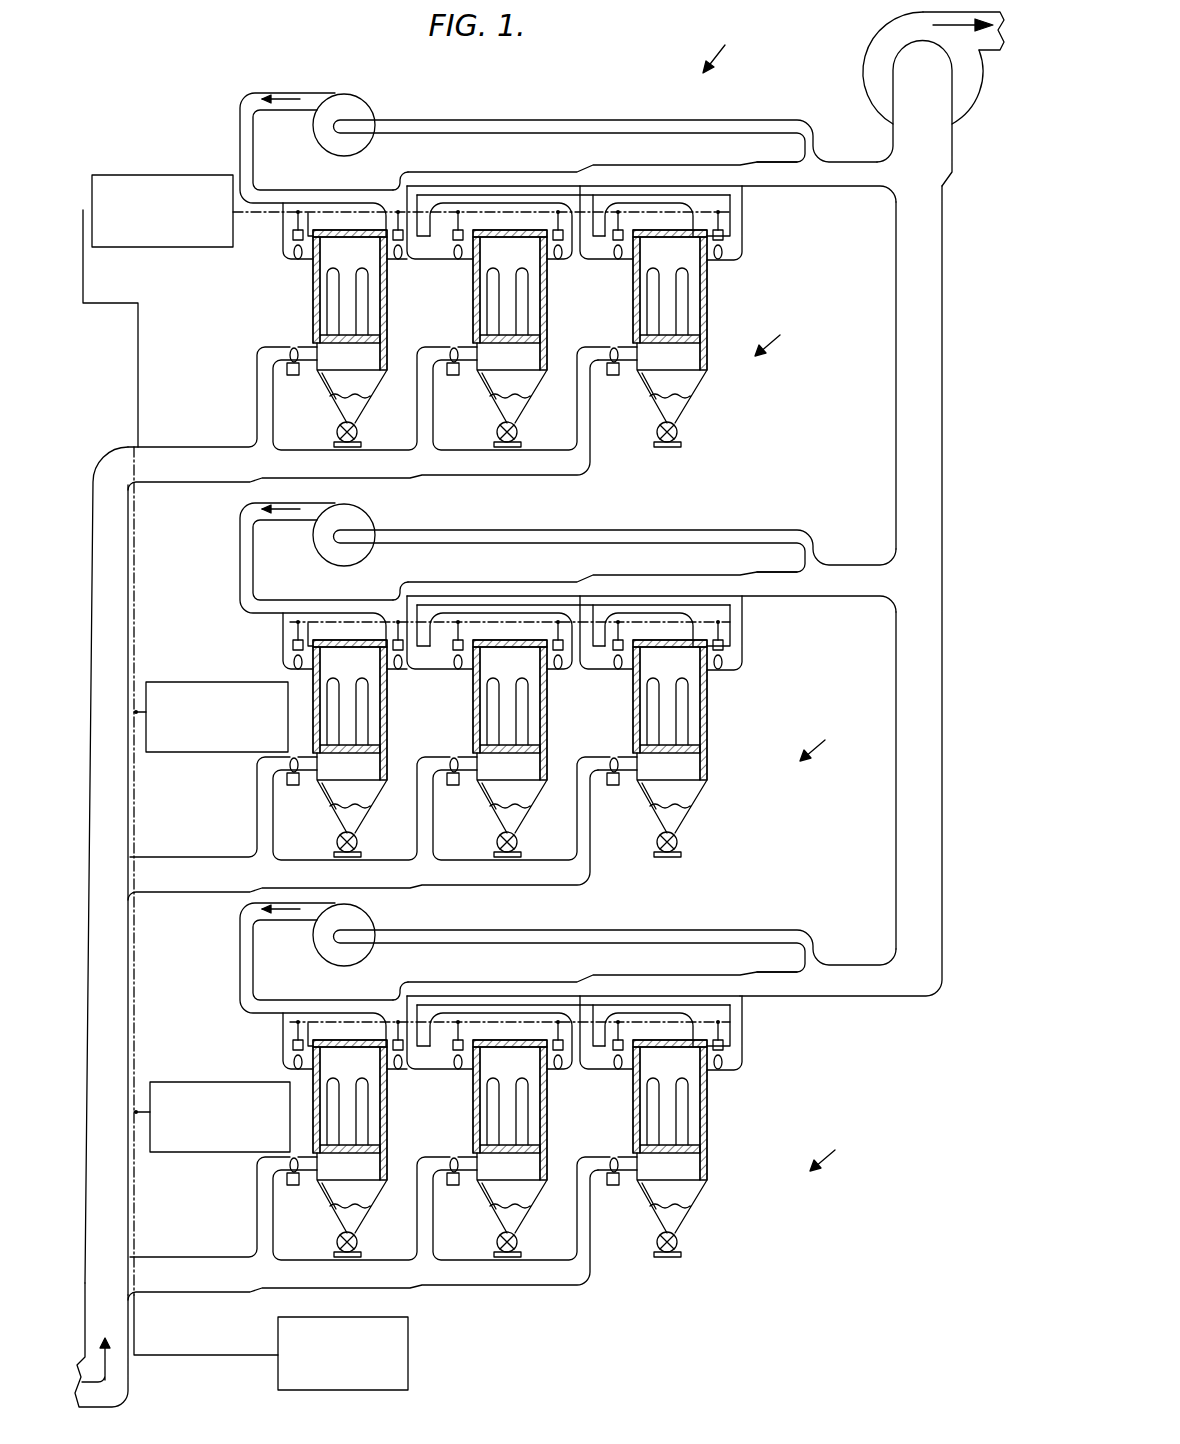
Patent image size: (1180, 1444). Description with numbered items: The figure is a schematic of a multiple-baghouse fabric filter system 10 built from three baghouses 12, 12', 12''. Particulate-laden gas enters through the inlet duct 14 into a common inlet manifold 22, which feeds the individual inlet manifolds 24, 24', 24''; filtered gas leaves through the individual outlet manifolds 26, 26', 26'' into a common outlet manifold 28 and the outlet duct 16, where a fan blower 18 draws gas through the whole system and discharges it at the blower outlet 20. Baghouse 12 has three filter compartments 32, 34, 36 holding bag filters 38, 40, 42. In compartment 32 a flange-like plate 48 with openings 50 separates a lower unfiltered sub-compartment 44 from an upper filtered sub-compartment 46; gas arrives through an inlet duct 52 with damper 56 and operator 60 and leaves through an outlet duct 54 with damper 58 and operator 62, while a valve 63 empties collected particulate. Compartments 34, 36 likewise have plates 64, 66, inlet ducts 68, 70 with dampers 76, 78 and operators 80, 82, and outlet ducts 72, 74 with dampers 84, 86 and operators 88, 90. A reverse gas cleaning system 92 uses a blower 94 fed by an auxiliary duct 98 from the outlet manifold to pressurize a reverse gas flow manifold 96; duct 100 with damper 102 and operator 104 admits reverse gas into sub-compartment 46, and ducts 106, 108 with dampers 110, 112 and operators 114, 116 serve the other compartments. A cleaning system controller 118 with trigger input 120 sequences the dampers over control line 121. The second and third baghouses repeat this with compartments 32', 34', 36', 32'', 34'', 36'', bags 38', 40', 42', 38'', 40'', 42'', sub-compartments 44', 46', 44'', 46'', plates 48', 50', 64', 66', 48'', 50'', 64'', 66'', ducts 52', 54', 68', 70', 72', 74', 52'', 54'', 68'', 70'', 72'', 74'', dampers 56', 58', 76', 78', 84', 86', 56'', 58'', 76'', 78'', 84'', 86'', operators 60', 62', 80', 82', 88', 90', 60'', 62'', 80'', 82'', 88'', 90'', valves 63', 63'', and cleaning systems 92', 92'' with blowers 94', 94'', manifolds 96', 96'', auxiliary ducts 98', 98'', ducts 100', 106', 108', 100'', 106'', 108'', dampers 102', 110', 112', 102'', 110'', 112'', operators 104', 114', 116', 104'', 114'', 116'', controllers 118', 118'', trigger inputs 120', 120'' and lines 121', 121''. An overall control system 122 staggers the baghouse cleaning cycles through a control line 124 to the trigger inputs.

The fabric filter system 10 is at (725, 49).
The baghouse 12 is at (781, 337).
The inlet duct 14 is at (130, 1388).
The outlet duct 16 is at (893, 133).
The fan blower 18 is at (867, 40).
The blower outlet 20 is at (937, 25).
The inlet manifold 22 is at (94, 625).
The inlet manifold 24 is at (363, 432).
The outlet manifold 26 is at (651, 170).
The outlet manifold 28 is at (942, 530).
The filter compartment 32 is at (328, 326).
The filter compartment 34 is at (489, 326).
The filter compartment 36 is at (649, 326).
The bag filters 38 is at (347, 285).
The bag filters 40 is at (500, 289).
The bag filters 42 is at (660, 289).
The lower sub-compartment 44 is at (301, 383).
The upper sub-compartment 46 is at (293, 290).
The flange-like plate 48 is at (369, 323).
The openings 50 is at (348, 356).
The inlet duct 52 is at (209, 397).
The outlet duct 54 is at (394, 164).
The damper 56 is at (277, 345).
The damper 58 is at (400, 282).
The operator 60 is at (361, 398).
The operator 62 is at (378, 208).
The valve 63 is at (366, 433).
The flange-like partitioning plate 64 is at (532, 323).
The flange-like partitioning plate 66 is at (691, 325).
The inlet duct 68 is at (521, 398).
The inlet duct 70 is at (636, 403).
The outlet duct 72 is at (606, 197).
The outlet duct 74 is at (745, 223).
The damper 76 is at (449, 342).
The damper 78 is at (609, 342).
The operator 80 is at (461, 383).
The operator 82 is at (621, 383).
The damper 84 is at (560, 282).
The damper 86 is at (736, 272).
The operator 88 is at (535, 201).
The operator 90 is at (706, 221).
The cleaning system 92 is at (261, 164).
The reverse gas blower 94 is at (357, 113).
The reverse gas flow manifold 96 is at (323, 150).
The auxiliary duct 98 is at (606, 125).
The duct 100 is at (269, 239).
The damper 102 is at (287, 247).
The operator 104 is at (292, 206).
The reverse gas flow duct 106 is at (434, 247).
The reverse gas flow duct 108 is at (588, 264).
The damper 110 is at (498, 252).
The damper 112 is at (642, 252).
The operator 114 is at (440, 201).
The operator 116 is at (637, 221).
The cleaning system controller 118 is at (162, 228).
The trigger input 120 is at (109, 295).
The line 121 is at (455, 243).
The control system 122 is at (400, 1361).
The control line 124 is at (134, 1322).
The cleaning system 92' is at (267, 574).
The reverse gas blower 94' is at (360, 528).
The reverse gas flow manifold 96' is at (323, 560).
The auxiliary duct 98' is at (615, 533).
The duct 100' is at (251, 634).
The damper 102' is at (264, 641).
The operator 104' is at (292, 616).
The reverse gas flow duct 106' is at (432, 657).
The reverse gas flow duct 108' is at (588, 675).
The damper 110' is at (497, 662).
The damper 112' is at (641, 662).
The operator 114' is at (440, 612).
The operator 116' is at (639, 631).
The cleaning system controller 118' is at (212, 688).
The trigger input 120' is at (158, 748).
The line 121' is at (453, 641).
The baghouse 12' is at (828, 740).
The inlet manifold 24' is at (363, 842).
The outlet manifold 26' is at (651, 577).
The filter compartment 32' is at (303, 736).
The filter compartment 34' is at (488, 736).
The filter compartment 36' is at (648, 736).
The bag filters 38' is at (347, 695).
The bag filters 40' is at (500, 699).
The bag filters 42' is at (660, 699).
The lower sub-compartment 44' is at (300, 796).
The upper sub-compartment 46' is at (274, 700).
The flange-like plate 48' is at (368, 731).
The openings 50' is at (345, 765).
The inlet duct 52' is at (210, 807).
The outlet duct 54' is at (394, 571).
The damper 56' is at (266, 778).
The damper 58' is at (398, 692).
The operator 60' is at (360, 808).
The operator 62' is at (375, 618).
The valve 63' is at (367, 837).
The flange-like partitioning plate 64' is at (533, 731).
The flange-like partitioning plate 66' is at (695, 736).
The inlet duct 68' is at (521, 808).
The inlet duct 70' is at (636, 813).
The outlet duct 72' is at (592, 606).
The outlet duct 74' is at (747, 633).
The damper 76' is at (445, 754).
The damper 78' is at (608, 754).
The operator 80' is at (455, 796).
The operator 82' is at (612, 796).
The damper 84' is at (560, 692).
The damper 86' is at (738, 684).
The operator 88' is at (532, 611).
The operator 90' is at (704, 631).
The cleaning system 92'' is at (268, 974).
The reverse gas blower 94'' is at (362, 933).
The reverse gas flow manifold 96'' is at (323, 960).
The auxiliary duct 98'' is at (615, 936).
The duct 100'' is at (243, 1031).
The damper 102'' is at (263, 1039).
The operator 104'' is at (292, 1013).
The reverse gas flow duct 106'' is at (429, 1056).
The reverse gas flow duct 108'' is at (585, 1074).
The damper 110'' is at (495, 1062).
The damper 112'' is at (639, 1062).
The operator 114'' is at (440, 1011).
The operator 116'' is at (640, 1031).
The cleaning system controller 118'' is at (212, 1095).
The trigger input 120'' is at (162, 1144).
The line 121'' is at (447, 1039).
The baghouse 12'' is at (839, 1149).
The inlet manifold 24'' is at (363, 1241).
The outlet manifold 26'' is at (602, 976).
The filter compartment 32'' is at (298, 1136).
The filter compartment 34'' is at (486, 1136).
The filter compartment 36'' is at (646, 1136).
The bag filters 38'' is at (347, 1094).
The bag filters 40'' is at (500, 1098).
The bag filters 42'' is at (660, 1098).
The lower sub-compartment 44'' is at (292, 1195).
The upper sub-compartment 46'' is at (273, 1098).
The flange-like plate 48'' is at (369, 1131).
The openings 50'' is at (345, 1163).
The inlet duct 52'' is at (210, 1207).
The outlet duct 54'' is at (390, 979).
The damper 56'' is at (263, 1177).
The damper 58'' is at (398, 1092).
The operator 60'' is at (358, 1208).
The operator 62'' is at (369, 1021).
The valve 63'' is at (369, 1241).
The flange-like partitioning plate 64'' is at (535, 1131).
The flange-like partitioning plate 66'' is at (699, 1136).
The inlet duct 68'' is at (521, 1208).
The inlet duct 70'' is at (636, 1213).
The outlet duct 72'' is at (590, 1008).
The outlet duct 74'' is at (750, 1033).
The damper 76'' is at (444, 1152).
The damper 78'' is at (606, 1152).
The operator 80'' is at (455, 1195).
The operator 82'' is at (612, 1195).
The damper 84'' is at (562, 1092).
The damper 86'' is at (742, 1082).
The operator 88'' is at (532, 1012).
The operator 90'' is at (703, 1031).